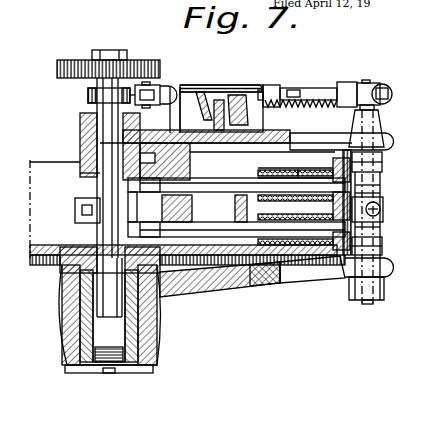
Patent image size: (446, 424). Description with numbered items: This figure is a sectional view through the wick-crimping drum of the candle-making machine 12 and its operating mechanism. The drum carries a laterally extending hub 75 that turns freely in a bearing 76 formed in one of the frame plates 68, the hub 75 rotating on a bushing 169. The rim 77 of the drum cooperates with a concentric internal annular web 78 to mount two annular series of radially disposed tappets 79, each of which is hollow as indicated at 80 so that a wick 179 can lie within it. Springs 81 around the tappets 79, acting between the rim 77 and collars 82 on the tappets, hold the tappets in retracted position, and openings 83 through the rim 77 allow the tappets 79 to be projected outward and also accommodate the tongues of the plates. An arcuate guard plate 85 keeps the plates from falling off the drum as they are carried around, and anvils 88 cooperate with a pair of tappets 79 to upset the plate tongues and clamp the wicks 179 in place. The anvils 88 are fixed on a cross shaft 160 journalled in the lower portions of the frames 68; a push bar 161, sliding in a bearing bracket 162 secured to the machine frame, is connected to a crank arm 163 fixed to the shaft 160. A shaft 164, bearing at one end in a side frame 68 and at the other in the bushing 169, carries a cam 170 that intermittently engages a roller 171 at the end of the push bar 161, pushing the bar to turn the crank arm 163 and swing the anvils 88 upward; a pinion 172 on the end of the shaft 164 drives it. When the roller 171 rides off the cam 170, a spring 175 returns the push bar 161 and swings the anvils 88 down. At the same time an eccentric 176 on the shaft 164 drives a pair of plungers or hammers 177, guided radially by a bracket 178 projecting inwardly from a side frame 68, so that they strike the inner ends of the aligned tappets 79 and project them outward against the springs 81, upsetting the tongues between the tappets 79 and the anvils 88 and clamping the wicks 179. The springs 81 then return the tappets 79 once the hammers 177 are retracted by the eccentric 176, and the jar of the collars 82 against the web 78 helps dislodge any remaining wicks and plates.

The column 12 is at (397, 206).
The frame plate 68 is at (68, 145).
The hub 75 is at (157, 325).
The bearing 76 is at (65, 328).
The rim 77 is at (333, 208).
The internal annular web 78 is at (235, 208).
The tappet 79 is at (243, 182).
The hollow 80 is at (315, 167).
The spring 81 is at (302, 273).
The collar 82 is at (252, 288).
The opening 83 is at (347, 160).
The arcuate guard plate 85 is at (383, 214).
The anvil 88 is at (378, 163).
The cross shaft 160 is at (367, 81).
The push bar 161 is at (270, 84).
The bearing bracket 162 is at (220, 86).
The crank arm 163 is at (385, 85).
The shaft 164 is at (107, 135).
The bushing 169 is at (80, 283).
The cam 170 is at (103, 97).
The roller 171 is at (160, 84).
The pinion 172 is at (133, 62).
The spring 175 is at (276, 108).
The eccentric 176 is at (133, 187).
The plunger or hammer 177 is at (206, 297).
The bracket 178 is at (231, 112).
The wick 179 is at (295, 207).